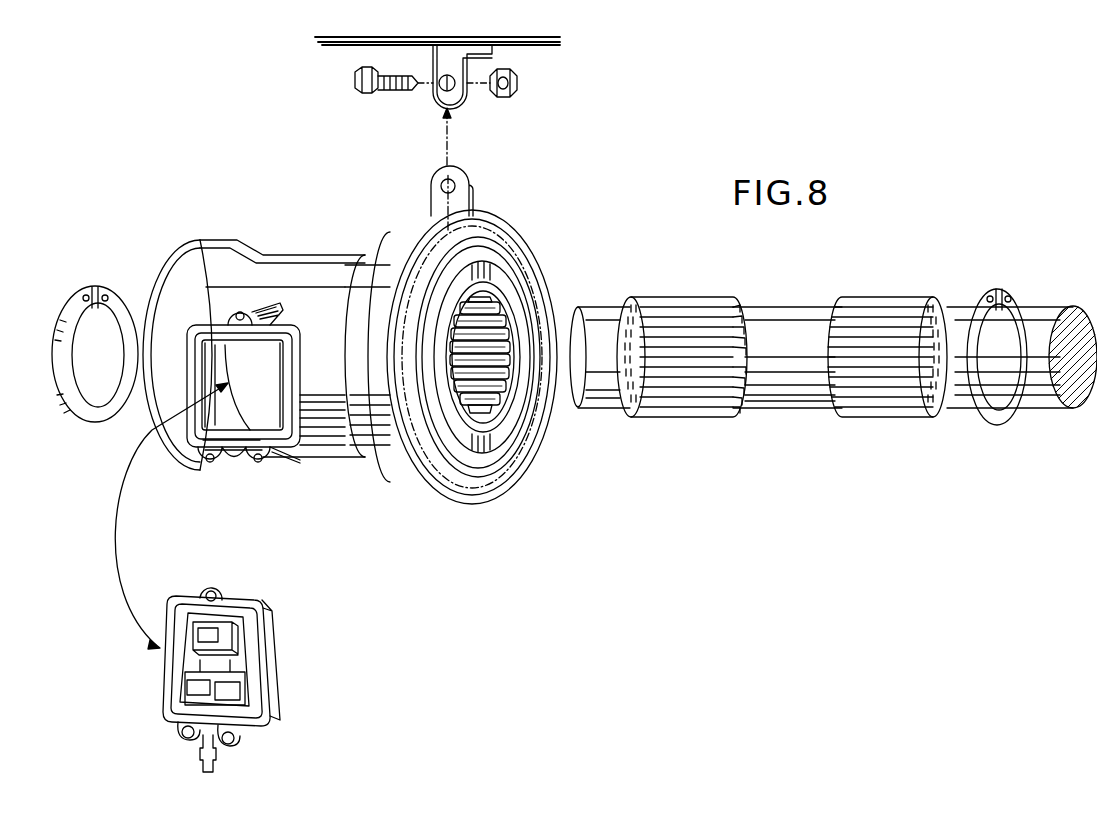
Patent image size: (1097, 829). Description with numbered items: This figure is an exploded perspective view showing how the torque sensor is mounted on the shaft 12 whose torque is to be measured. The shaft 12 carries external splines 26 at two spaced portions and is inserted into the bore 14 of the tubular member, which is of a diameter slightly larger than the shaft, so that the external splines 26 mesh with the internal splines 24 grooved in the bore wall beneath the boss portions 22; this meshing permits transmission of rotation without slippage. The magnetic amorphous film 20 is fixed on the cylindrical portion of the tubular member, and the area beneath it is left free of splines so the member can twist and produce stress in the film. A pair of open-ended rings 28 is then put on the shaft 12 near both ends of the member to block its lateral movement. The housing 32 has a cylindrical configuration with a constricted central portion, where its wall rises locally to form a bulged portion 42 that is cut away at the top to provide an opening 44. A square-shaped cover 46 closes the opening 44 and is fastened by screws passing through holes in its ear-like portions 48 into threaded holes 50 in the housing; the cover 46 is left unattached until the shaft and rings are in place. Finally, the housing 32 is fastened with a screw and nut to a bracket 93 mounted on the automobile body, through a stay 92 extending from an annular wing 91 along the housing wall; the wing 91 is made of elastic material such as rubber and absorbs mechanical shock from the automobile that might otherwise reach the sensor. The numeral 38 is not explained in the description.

The shaft 12 is at (614, 306).
The bore 14 is at (490, 405).
The magnetic amorphous film 20 is at (272, 378).
The boss portions 22 is at (503, 405).
The internal splines 24 is at (500, 318).
The external splines 26 is at (695, 420).
The rings 28 is at (88, 426).
The housing 32 is at (428, 241).
The bearing ring 38 is at (522, 395).
The bulged portion 42 is at (188, 369).
The opening 44 is at (278, 415).
The cover 46 is at (277, 612).
The ear-like portions 48 is at (228, 600).
The threaded holes 50 is at (210, 590).
The annular wing 91 is at (493, 213).
The stay 92 is at (470, 178).
The bracket 93 is at (467, 104).